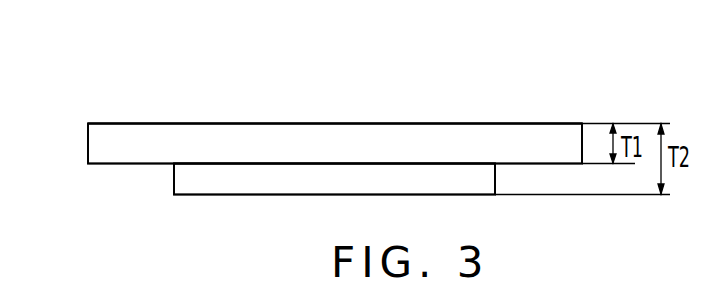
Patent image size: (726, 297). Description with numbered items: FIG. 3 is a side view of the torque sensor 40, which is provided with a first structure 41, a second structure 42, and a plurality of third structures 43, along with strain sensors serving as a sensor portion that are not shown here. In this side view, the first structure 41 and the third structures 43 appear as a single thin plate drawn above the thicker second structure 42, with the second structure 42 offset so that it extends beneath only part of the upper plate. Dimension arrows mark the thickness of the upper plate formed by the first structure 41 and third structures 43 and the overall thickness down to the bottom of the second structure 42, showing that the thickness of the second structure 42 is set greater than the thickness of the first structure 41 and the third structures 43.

The torque sensor 40 is at (540, 93).
The first structure 41 is at (88, 143).
The second structure 42 is at (174, 186).
The third structures 43 is at (146, 123).